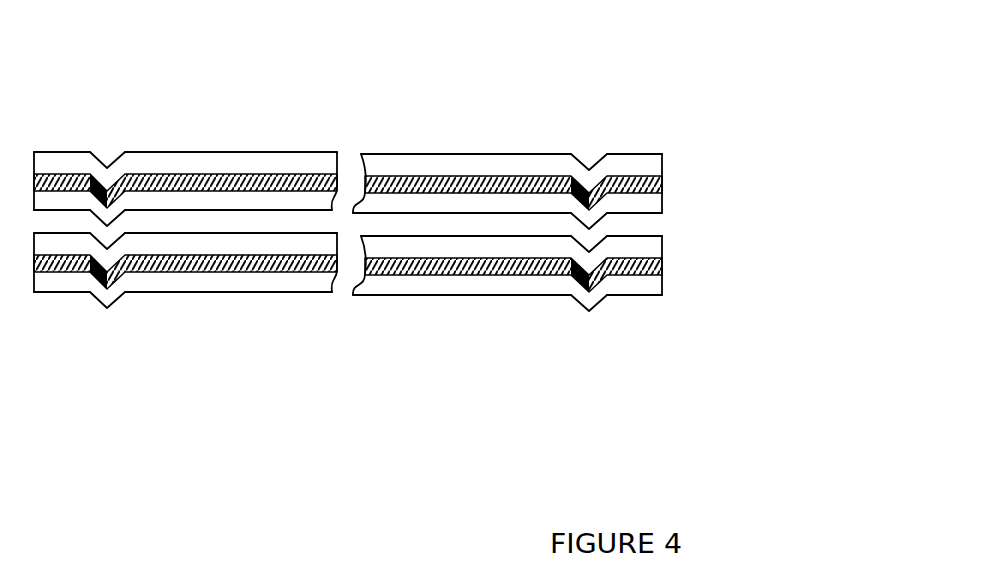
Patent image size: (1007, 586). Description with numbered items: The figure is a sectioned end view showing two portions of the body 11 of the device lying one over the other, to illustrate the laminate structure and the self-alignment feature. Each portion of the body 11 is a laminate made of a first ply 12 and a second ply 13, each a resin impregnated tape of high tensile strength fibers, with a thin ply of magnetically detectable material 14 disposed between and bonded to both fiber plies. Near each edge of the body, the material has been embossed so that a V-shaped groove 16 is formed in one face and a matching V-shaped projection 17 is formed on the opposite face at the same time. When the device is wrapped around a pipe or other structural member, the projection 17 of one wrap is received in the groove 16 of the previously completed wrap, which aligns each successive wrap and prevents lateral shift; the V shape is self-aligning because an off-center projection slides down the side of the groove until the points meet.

The body 11 is at (448, 147).
The first ply 12 is at (184, 161).
The second ply 13 is at (653, 204).
The magnetically detectable material 14 is at (662, 185).
The V-shaped groove 16 is at (109, 163).
The V-shaped projection 17 is at (105, 297).